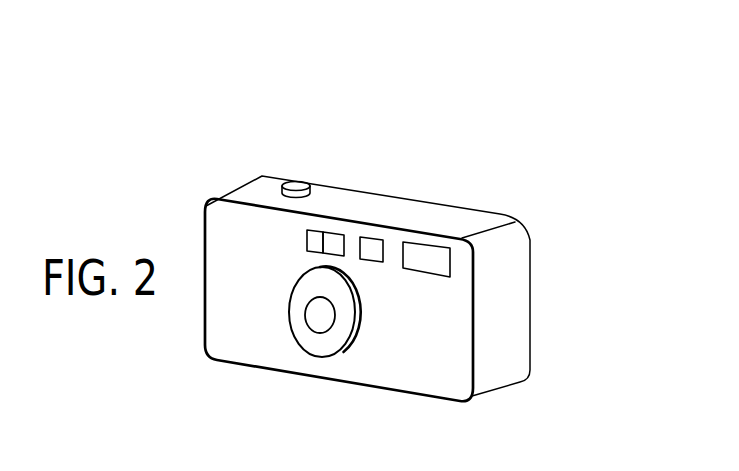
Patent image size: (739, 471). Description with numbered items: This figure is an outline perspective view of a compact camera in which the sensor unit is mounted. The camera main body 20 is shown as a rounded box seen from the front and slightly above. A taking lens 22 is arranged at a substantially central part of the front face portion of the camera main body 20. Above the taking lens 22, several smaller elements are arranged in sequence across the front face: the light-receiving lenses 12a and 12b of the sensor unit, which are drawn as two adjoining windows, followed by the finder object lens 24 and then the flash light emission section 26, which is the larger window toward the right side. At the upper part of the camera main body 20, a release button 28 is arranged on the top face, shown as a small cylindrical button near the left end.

The camera main body 20 is at (513, 328).
The taking lens 22 is at (318, 320).
The finder object lens 24 is at (373, 243).
The flash light emission section 26 is at (437, 262).
The release button 28 is at (296, 185).
The light-receiving lens 12a is at (313, 232).
The light-receiving lens 12b is at (333, 232).